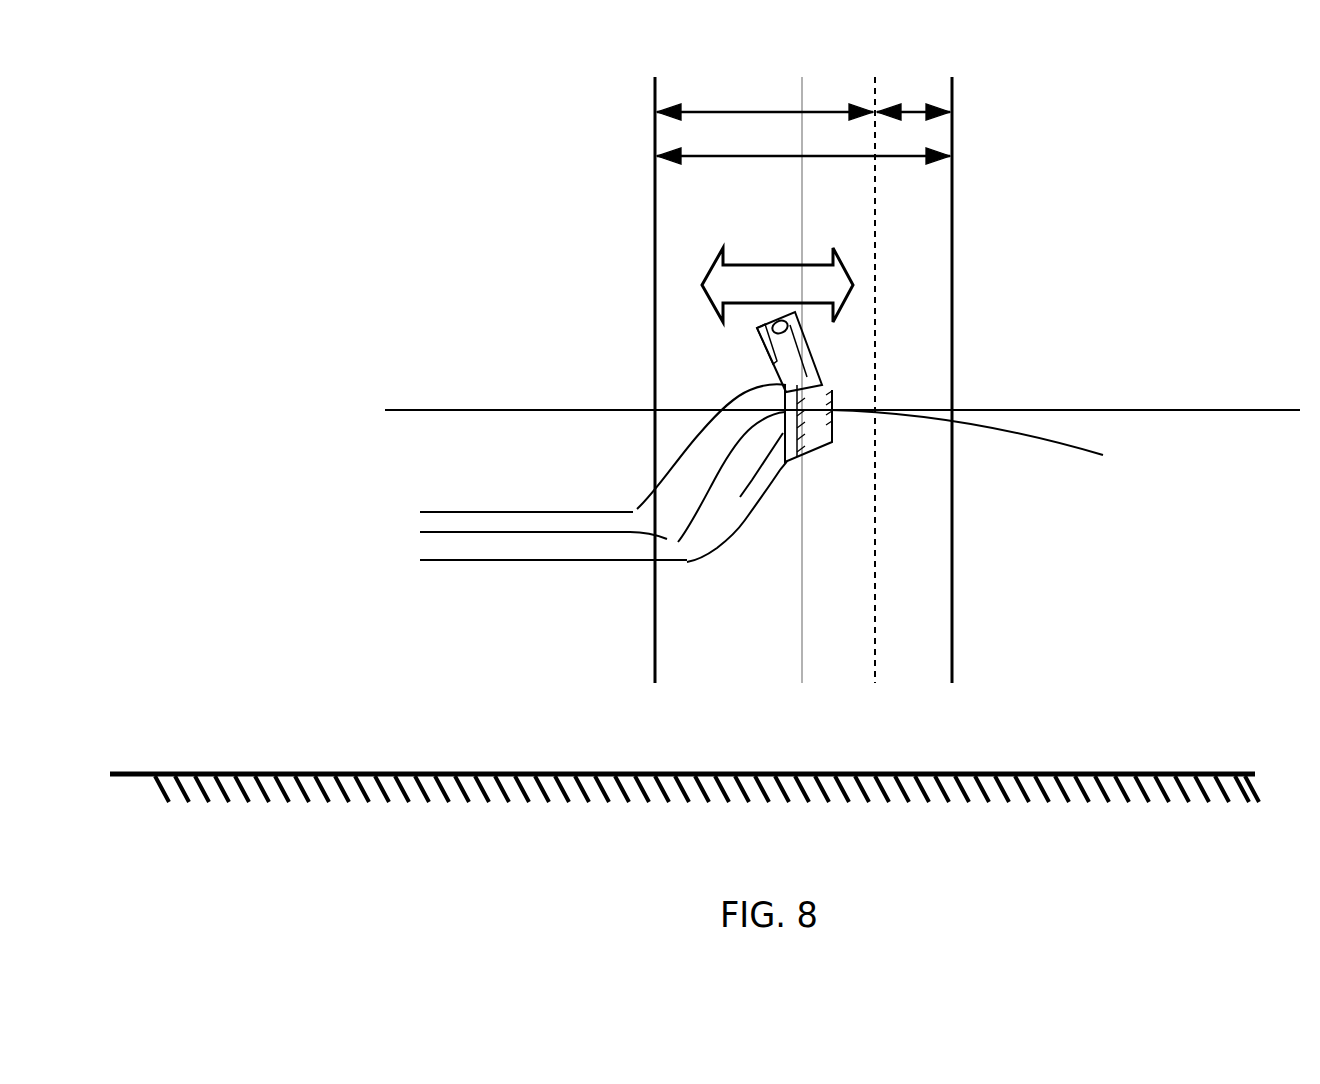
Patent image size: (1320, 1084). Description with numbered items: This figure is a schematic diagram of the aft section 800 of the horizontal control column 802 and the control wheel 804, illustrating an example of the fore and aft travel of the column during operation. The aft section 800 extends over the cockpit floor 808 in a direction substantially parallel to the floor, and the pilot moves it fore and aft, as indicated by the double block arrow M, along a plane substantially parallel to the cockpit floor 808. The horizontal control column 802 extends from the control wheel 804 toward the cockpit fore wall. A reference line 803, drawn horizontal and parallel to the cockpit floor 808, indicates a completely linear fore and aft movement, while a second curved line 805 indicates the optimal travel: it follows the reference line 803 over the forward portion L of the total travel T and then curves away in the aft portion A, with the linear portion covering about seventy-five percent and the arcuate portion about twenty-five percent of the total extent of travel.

The aft section 800 is at (921, 259).
The horizontal control column 802 is at (638, 518).
The reference line 803 is at (1042, 398).
The control wheel 804 is at (823, 385).
The second curved line 805 is at (1122, 448).
The cockpit floor 808 is at (1140, 746).